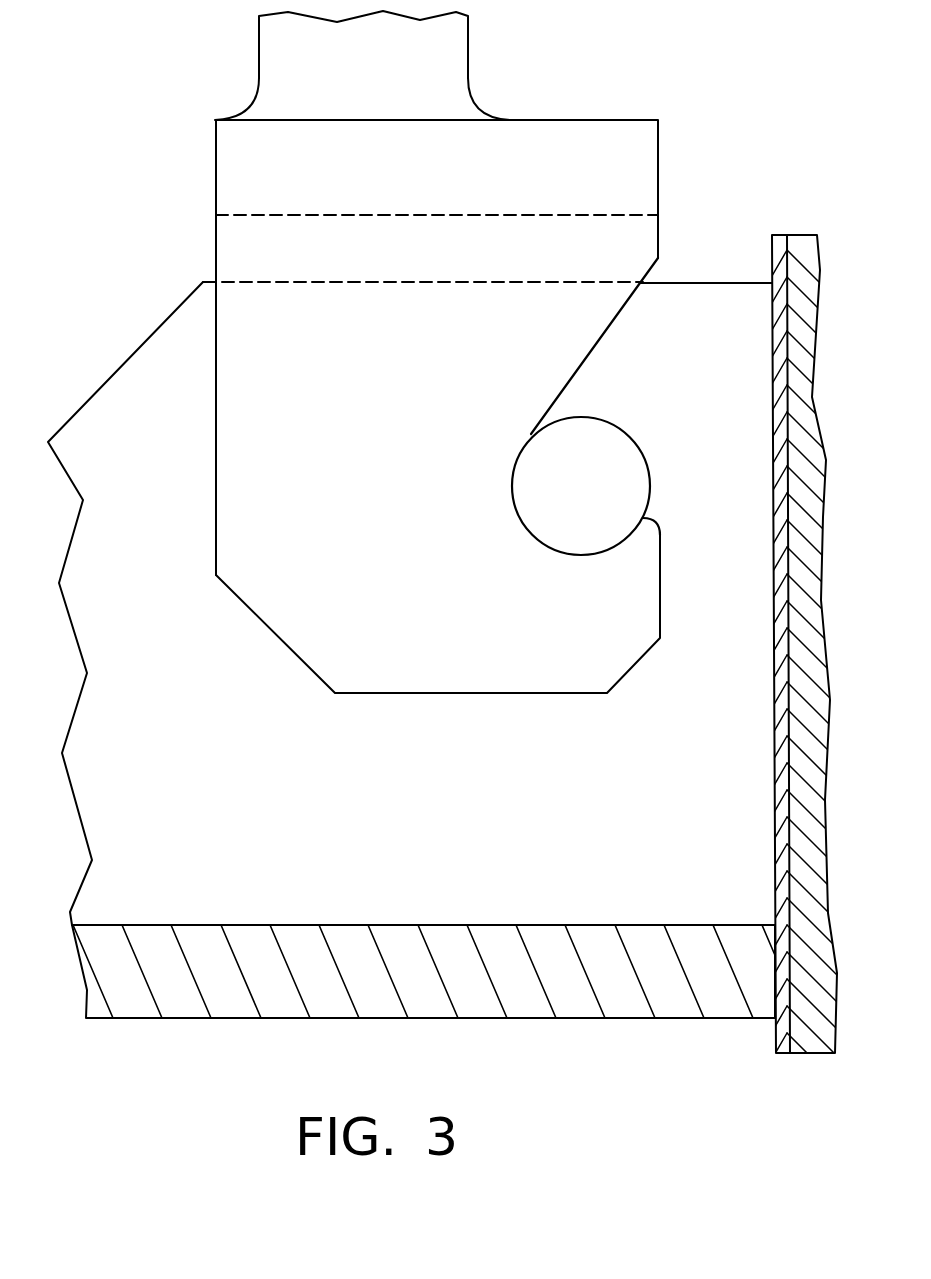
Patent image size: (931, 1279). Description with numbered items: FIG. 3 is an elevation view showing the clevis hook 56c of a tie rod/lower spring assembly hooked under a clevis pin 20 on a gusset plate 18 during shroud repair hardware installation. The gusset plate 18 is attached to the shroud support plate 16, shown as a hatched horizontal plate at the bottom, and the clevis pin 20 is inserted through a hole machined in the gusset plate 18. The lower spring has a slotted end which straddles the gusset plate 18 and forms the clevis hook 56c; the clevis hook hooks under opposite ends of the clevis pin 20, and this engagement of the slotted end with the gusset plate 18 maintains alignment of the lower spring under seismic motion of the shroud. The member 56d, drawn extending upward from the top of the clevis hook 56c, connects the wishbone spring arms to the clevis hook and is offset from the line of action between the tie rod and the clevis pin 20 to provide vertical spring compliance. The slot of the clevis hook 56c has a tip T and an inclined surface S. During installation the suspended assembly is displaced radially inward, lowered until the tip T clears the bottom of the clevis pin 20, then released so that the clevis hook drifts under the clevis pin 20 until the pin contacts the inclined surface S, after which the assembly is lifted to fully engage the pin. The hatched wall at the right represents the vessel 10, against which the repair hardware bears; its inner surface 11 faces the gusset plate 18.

The vessel 10 is at (797, 677).
The inner surface of wall 11 is at (780, 608).
The shroud support plate 16 is at (400, 933).
The gusset plate 18 is at (223, 748).
The clevis pin 20 is at (625, 443).
The clevis hook 56c is at (237, 460).
The connecting member 56d is at (443, 50).
The inclined surface S is at (593, 352).
The tip T is at (647, 520).